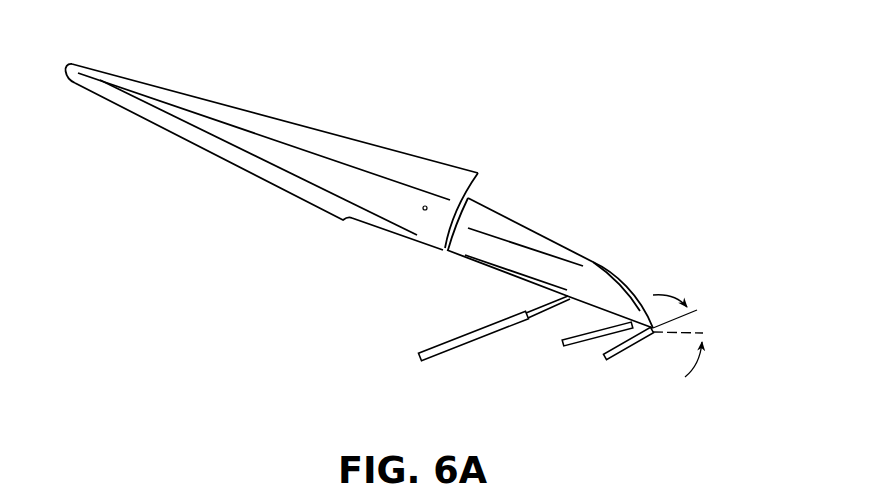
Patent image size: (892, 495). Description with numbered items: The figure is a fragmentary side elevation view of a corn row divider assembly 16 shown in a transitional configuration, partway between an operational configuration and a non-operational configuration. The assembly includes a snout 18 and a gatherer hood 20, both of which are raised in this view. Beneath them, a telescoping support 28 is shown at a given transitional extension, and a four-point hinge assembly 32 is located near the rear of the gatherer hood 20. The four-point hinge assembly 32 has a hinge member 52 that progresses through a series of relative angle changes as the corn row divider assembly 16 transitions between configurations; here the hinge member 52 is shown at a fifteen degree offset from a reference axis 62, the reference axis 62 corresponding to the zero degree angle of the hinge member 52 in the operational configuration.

The corn row divider assembly 16 is at (600, 89).
The snout 18 is at (303, 122).
The gatherer hood 20 is at (497, 210).
The telescoping support 28 is at (433, 350).
The four-point hinge assembly 32 is at (650, 372).
The hinge member 52 is at (614, 356).
The reference axis 62 is at (702, 333).